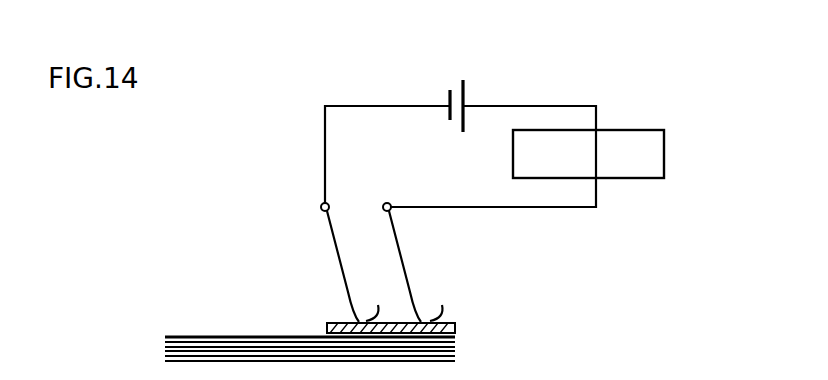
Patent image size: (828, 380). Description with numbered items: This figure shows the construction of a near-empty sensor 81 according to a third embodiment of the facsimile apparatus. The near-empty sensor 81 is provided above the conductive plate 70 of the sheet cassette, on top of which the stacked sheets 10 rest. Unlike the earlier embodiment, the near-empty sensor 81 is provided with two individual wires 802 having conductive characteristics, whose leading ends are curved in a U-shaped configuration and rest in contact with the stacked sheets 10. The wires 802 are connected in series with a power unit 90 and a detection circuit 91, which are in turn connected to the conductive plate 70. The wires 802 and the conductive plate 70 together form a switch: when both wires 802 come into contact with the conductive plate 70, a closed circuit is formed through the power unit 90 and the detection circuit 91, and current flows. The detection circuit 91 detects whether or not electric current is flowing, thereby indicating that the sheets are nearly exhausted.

The stacked sheets 10 is at (188, 336).
The conductive plate 70 is at (455, 323).
The near-empty sensor 81 is at (350, 244).
The wire 802 is at (346, 288).
The power unit 90 is at (464, 92).
The detection circuit 91 is at (664, 130).